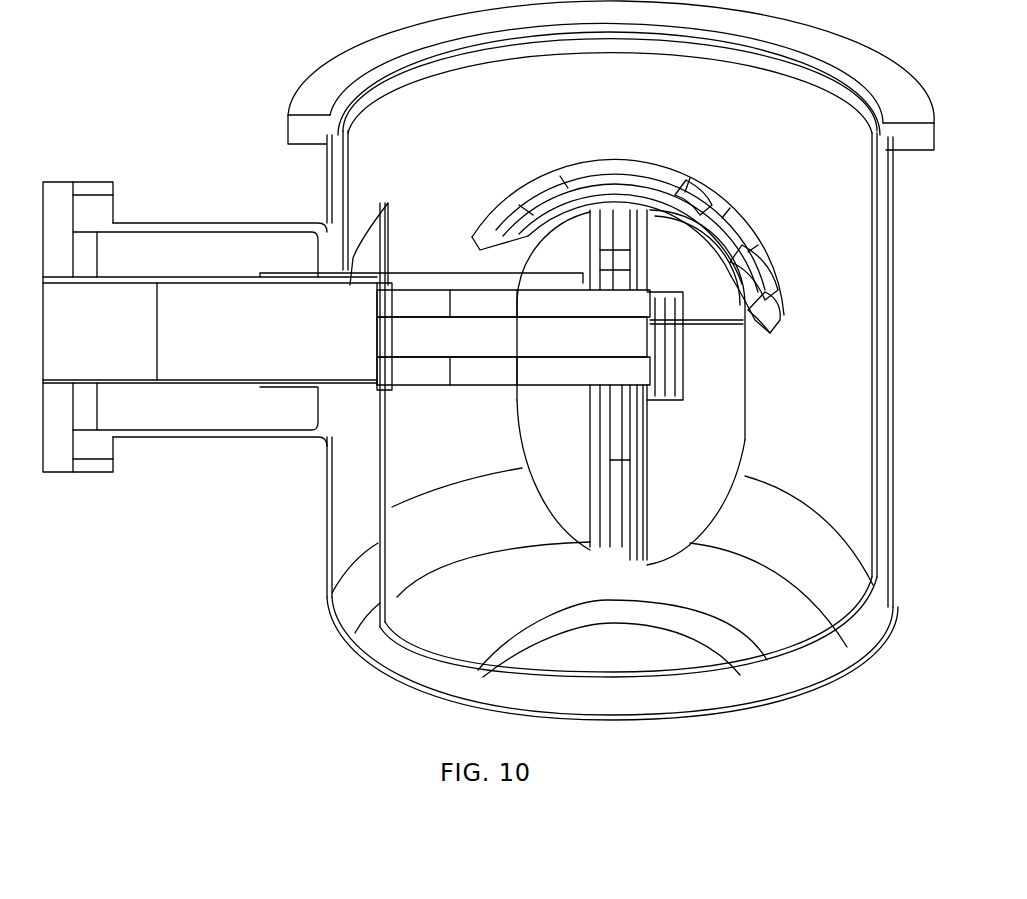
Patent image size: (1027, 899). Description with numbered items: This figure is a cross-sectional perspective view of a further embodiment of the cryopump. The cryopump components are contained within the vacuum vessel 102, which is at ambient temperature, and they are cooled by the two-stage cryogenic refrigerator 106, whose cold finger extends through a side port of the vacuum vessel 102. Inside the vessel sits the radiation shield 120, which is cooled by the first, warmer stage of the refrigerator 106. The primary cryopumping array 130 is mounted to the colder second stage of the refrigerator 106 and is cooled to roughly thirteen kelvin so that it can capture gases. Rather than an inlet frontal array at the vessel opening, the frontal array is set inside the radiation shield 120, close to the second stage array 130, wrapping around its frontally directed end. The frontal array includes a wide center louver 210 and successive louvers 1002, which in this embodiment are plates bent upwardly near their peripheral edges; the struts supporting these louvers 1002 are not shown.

The vacuum vessel 102 is at (893, 513).
The two-stage cryogenic refrigerator 106 is at (265, 406).
The radiation shield 120 is at (870, 393).
The primary cryopumping array 130 is at (747, 447).
The center louver 210 is at (610, 163).
The louvers 1002 is at (683, 182).